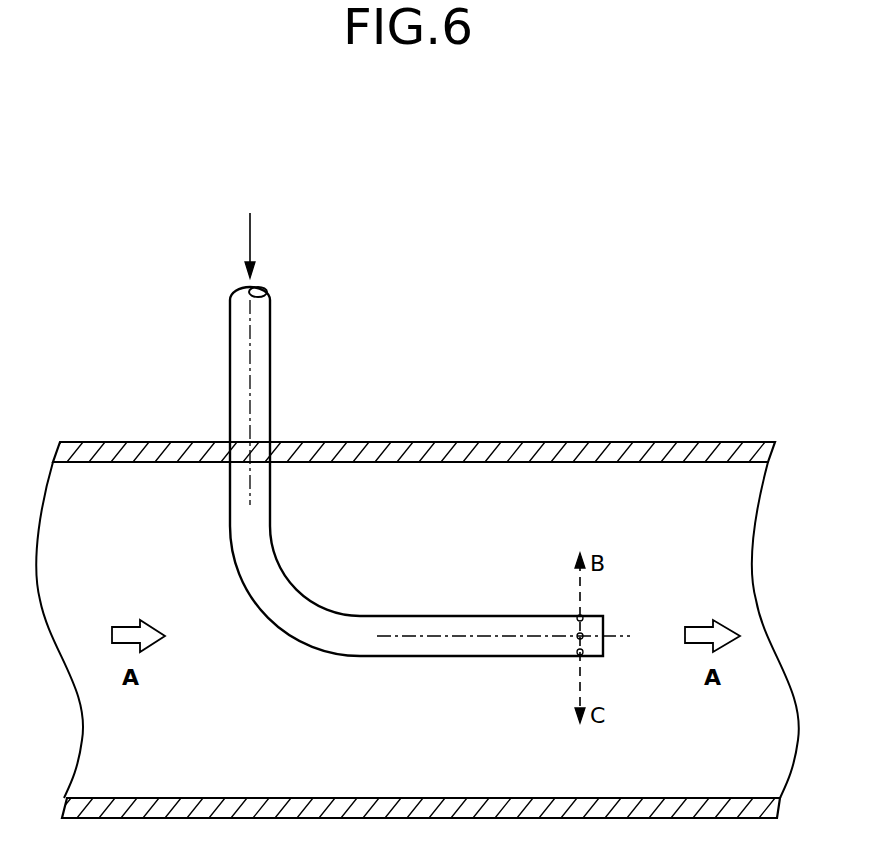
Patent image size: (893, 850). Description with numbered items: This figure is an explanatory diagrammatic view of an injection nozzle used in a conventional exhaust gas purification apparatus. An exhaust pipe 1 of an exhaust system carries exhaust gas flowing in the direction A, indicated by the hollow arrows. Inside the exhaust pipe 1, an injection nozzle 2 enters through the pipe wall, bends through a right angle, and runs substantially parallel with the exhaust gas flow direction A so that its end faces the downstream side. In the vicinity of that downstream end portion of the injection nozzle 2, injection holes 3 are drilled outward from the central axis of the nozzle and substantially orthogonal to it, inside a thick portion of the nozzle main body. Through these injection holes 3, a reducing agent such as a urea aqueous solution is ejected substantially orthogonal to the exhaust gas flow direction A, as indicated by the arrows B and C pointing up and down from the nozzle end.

The exhaust pipe 1 is at (386, 438).
The injection nozzle 2 is at (415, 657).
The injection holes 3 is at (583, 636).